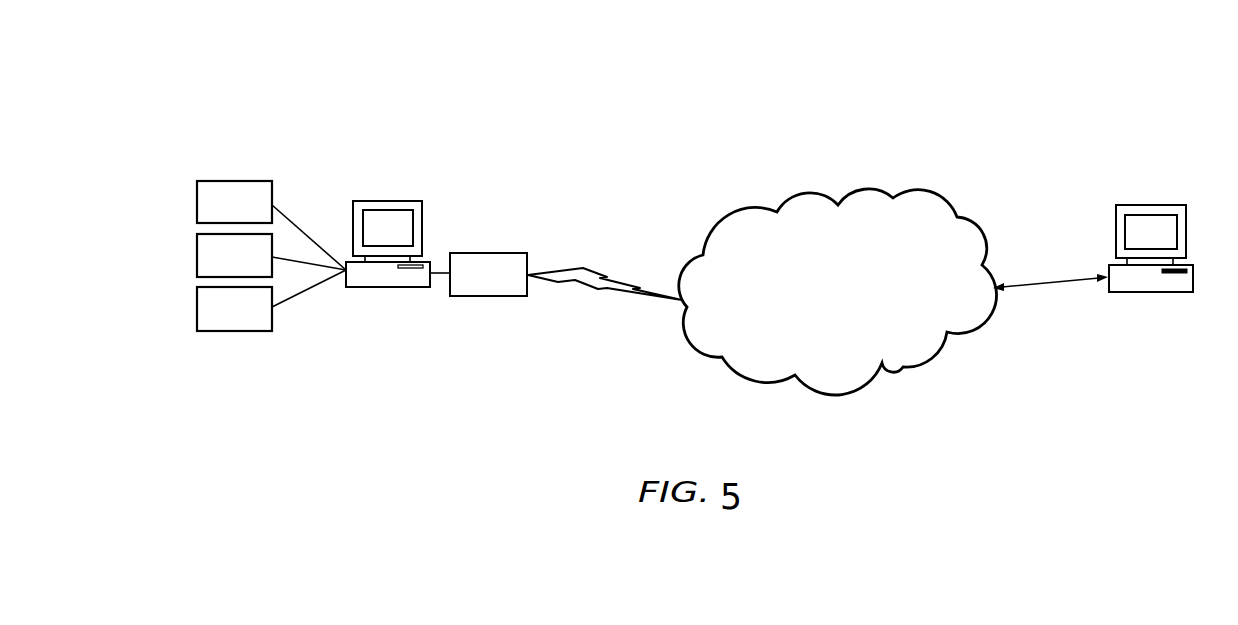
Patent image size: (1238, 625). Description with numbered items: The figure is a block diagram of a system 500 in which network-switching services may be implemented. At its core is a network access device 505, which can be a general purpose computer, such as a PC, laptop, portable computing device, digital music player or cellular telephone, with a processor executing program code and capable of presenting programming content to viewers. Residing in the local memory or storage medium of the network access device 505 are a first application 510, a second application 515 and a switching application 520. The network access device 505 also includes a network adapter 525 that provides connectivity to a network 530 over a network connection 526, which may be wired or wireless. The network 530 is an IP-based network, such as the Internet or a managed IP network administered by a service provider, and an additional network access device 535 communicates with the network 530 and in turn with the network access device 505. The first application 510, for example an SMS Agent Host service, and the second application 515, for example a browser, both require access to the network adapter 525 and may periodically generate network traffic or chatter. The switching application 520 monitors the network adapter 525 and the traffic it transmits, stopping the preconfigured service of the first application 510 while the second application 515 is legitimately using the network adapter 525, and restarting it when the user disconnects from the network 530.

The system 500 is at (545, 88).
The network access device 505 is at (385, 201).
The first application 510 is at (197, 200).
The second application 515 is at (197, 256).
The switching application 520 is at (197, 310).
The network adapter 525 is at (487, 296).
The network connection 526 is at (598, 270).
The network 530 is at (903, 367).
The additional network access device 535 is at (1153, 205).